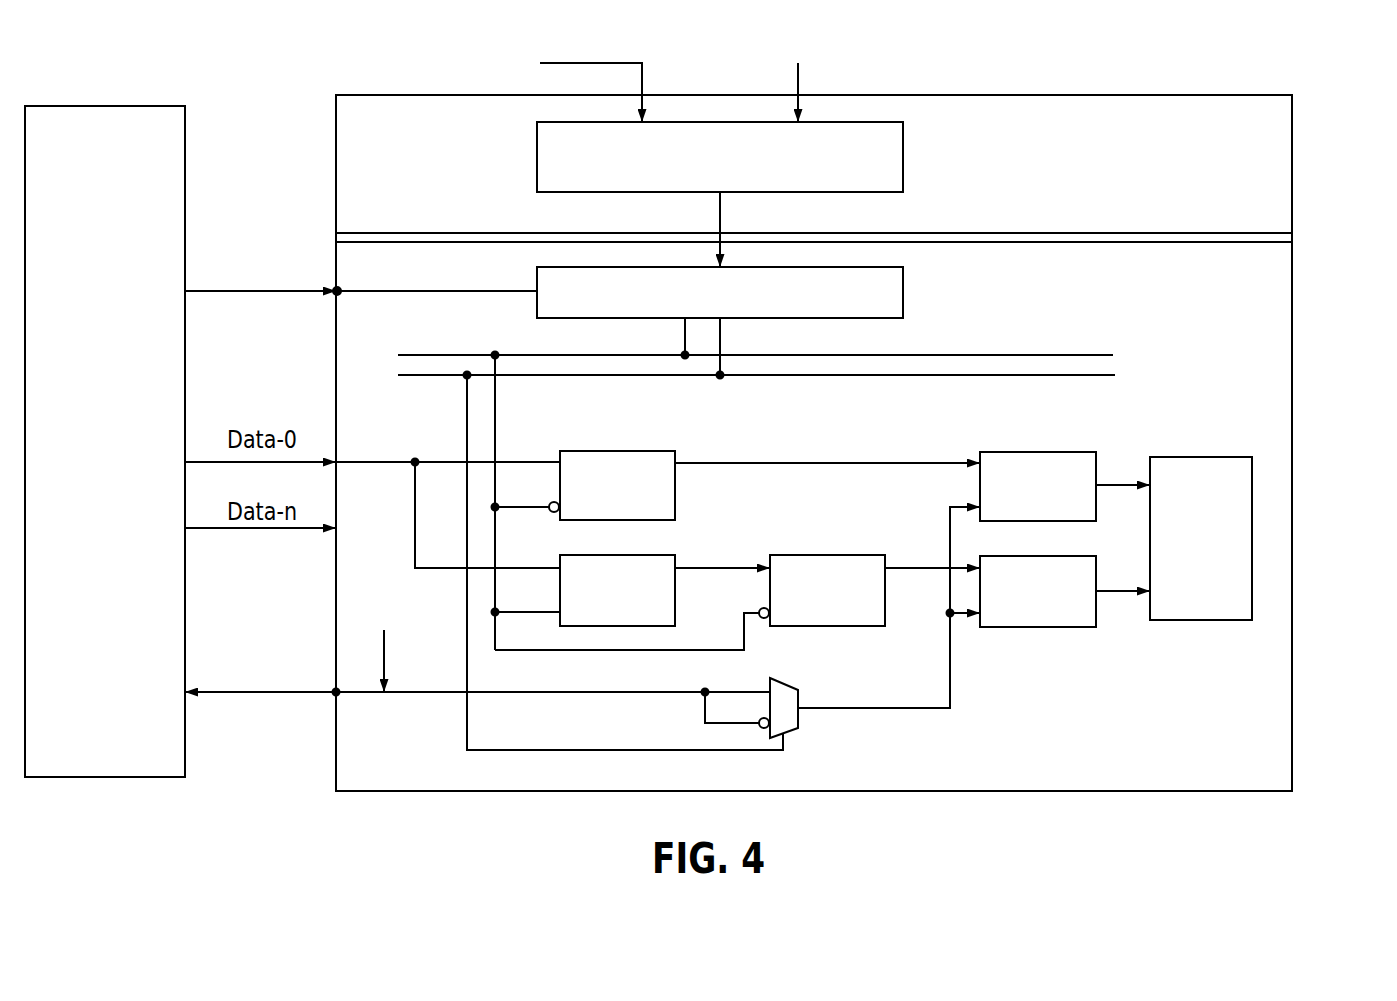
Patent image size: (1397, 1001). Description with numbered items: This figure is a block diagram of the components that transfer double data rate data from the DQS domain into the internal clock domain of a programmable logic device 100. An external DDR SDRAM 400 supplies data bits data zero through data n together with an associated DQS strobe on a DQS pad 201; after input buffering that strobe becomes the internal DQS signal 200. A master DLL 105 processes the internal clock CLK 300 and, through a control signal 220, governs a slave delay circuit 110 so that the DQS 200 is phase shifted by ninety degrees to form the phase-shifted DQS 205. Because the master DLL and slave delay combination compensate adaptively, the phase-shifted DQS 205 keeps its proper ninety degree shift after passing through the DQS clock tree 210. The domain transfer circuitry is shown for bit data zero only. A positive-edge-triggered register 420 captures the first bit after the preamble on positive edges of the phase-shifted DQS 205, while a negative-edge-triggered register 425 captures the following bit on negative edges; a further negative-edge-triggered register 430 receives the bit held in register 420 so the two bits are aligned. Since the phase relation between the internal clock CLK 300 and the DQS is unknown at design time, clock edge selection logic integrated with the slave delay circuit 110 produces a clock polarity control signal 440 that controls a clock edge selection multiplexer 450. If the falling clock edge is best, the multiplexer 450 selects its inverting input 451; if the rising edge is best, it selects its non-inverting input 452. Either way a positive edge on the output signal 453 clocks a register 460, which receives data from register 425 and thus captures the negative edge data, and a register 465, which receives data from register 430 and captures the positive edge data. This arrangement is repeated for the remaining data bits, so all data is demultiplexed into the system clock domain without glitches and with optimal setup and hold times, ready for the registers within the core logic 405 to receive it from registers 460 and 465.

The programmable logic device 100 is at (1345, 197).
The master DLL 105 is at (903, 157).
The slave delay circuit 110 is at (903, 292).
The internal DQS signal 200 is at (500, 291).
The DQS pad 201 is at (335, 288).
The phase-shifted DQS 205 is at (690, 343).
The DQS clock tree 210 is at (1230, 385).
The control signal 220 is at (720, 218).
The internal clock CLK 300 is at (612, 63).
The external DDR SDRAM 400 is at (117, 106).
The core logic 405 is at (1205, 620).
The positive-edge-triggered register 420 is at (675, 560).
The negative-edge-triggered register 425 is at (635, 451).
The negative-edge-triggered register 430 is at (847, 555).
The clock polarity control signal 440 is at (552, 375).
The clock edge selection multiplexer 450 is at (800, 720).
The inverting input 451 is at (700, 712).
The non-inverting input 452 is at (755, 690).
The output signal 453 is at (925, 708).
The register 460 is at (1042, 452).
The register 465 is at (1097, 568).